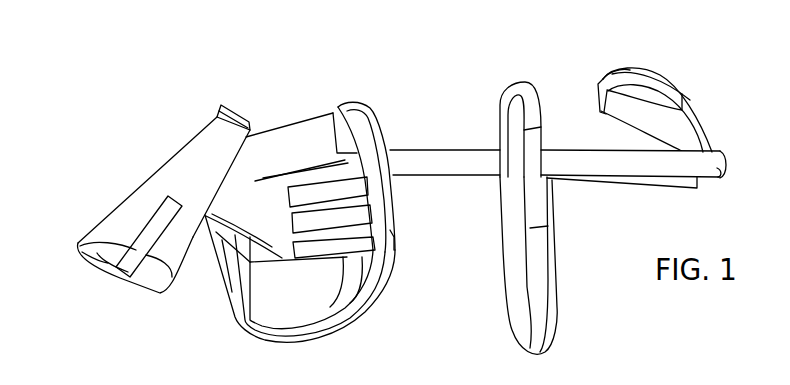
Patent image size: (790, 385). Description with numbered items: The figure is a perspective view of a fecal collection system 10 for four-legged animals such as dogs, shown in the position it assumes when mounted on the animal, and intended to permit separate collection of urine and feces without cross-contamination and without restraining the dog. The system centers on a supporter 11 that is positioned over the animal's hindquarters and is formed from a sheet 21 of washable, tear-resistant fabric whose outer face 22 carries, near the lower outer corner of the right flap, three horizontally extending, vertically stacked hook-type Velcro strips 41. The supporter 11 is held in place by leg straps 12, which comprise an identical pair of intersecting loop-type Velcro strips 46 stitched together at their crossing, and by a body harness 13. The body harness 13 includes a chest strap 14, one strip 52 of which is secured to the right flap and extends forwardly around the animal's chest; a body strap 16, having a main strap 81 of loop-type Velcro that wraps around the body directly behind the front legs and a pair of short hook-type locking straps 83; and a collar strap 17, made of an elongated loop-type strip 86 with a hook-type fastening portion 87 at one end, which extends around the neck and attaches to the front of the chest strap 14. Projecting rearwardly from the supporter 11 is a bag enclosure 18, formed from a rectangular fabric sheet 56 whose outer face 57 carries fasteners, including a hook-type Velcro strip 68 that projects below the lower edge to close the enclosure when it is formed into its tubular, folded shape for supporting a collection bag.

The fecal collection system 10 is at (135, 69).
The supporter 11 is at (290, 121).
The leg straps 12 is at (328, 342).
The body harness 13 is at (452, 97).
The chest strap 14 is at (455, 164).
The body strap 16 is at (509, 323).
The collar strap 17 is at (702, 111).
The bag enclosure 18 is at (181, 148).
The sheet 21 is at (312, 125).
The outer face 22 is at (319, 223).
The hook-type Velcro strips 41 is at (312, 250).
The elongated flexible strips 46 is at (383, 268).
The strip 52 is at (622, 163).
The fabric sheet 56 is at (135, 211).
The outer face 57 is at (184, 156).
The hook-type Velcro strip 68 is at (148, 239).
The main strap 81 is at (527, 102).
The locking straps 83 is at (542, 200).
The elongated strip 86 is at (637, 117).
The fastening portion 87 is at (603, 86).